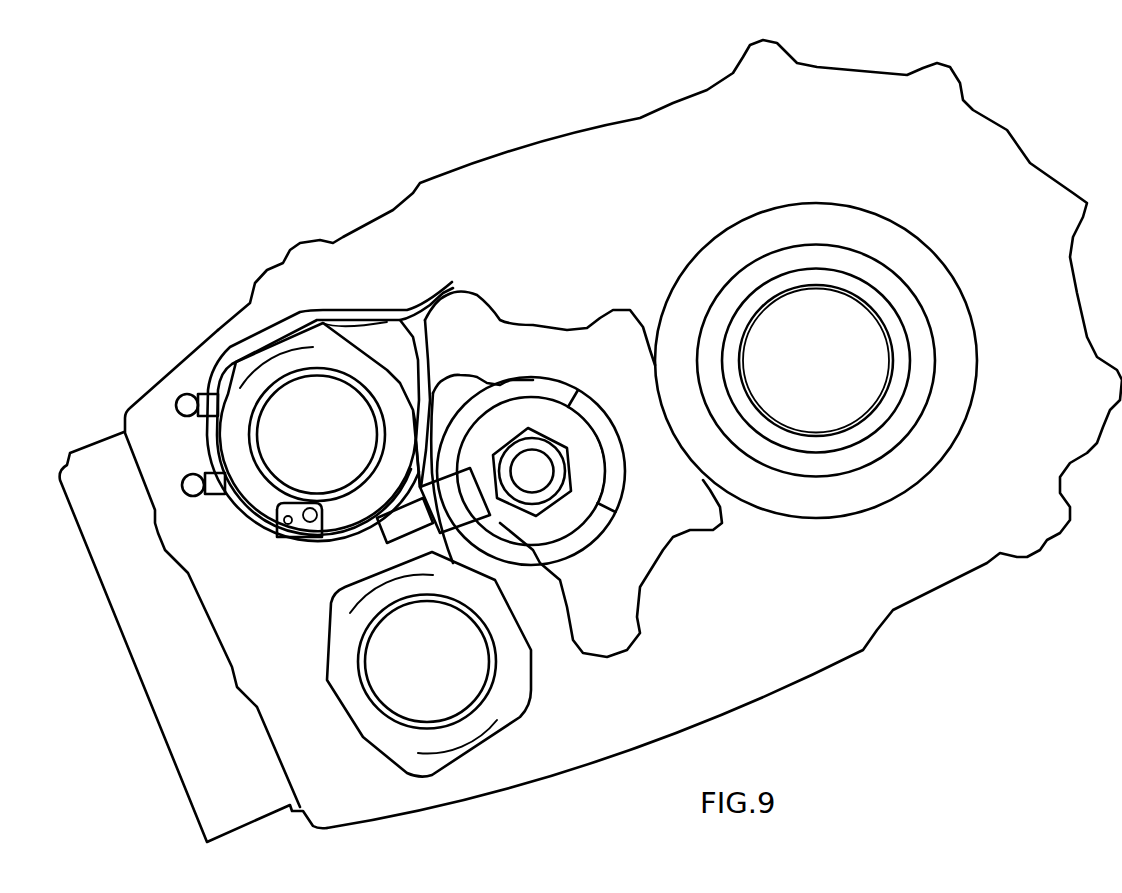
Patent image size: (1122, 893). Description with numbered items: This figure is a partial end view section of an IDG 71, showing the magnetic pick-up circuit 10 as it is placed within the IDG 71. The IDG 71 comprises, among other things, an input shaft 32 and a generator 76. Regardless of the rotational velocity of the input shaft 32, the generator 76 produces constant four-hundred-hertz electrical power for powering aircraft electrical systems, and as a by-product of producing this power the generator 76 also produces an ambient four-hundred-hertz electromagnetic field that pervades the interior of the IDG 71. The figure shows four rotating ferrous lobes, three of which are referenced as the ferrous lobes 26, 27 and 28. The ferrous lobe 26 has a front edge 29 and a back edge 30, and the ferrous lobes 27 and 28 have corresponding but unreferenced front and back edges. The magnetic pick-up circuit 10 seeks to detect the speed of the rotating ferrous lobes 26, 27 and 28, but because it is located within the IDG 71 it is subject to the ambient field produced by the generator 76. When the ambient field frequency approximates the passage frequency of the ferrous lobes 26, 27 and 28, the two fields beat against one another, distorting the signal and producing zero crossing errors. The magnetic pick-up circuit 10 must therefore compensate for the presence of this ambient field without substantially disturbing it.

The magnetic pick-up circuit 10 is at (410, 497).
The ferrous lobe 26 is at (493, 500).
The ferrous lobe 27 is at (550, 515).
The ferrous lobe 28 is at (575, 446).
The front edge 29 is at (413, 407).
The back edge 30 is at (507, 493).
The input shaft 32 is at (543, 452).
The IDG 71 is at (833, 653).
The generator 76 is at (797, 230).